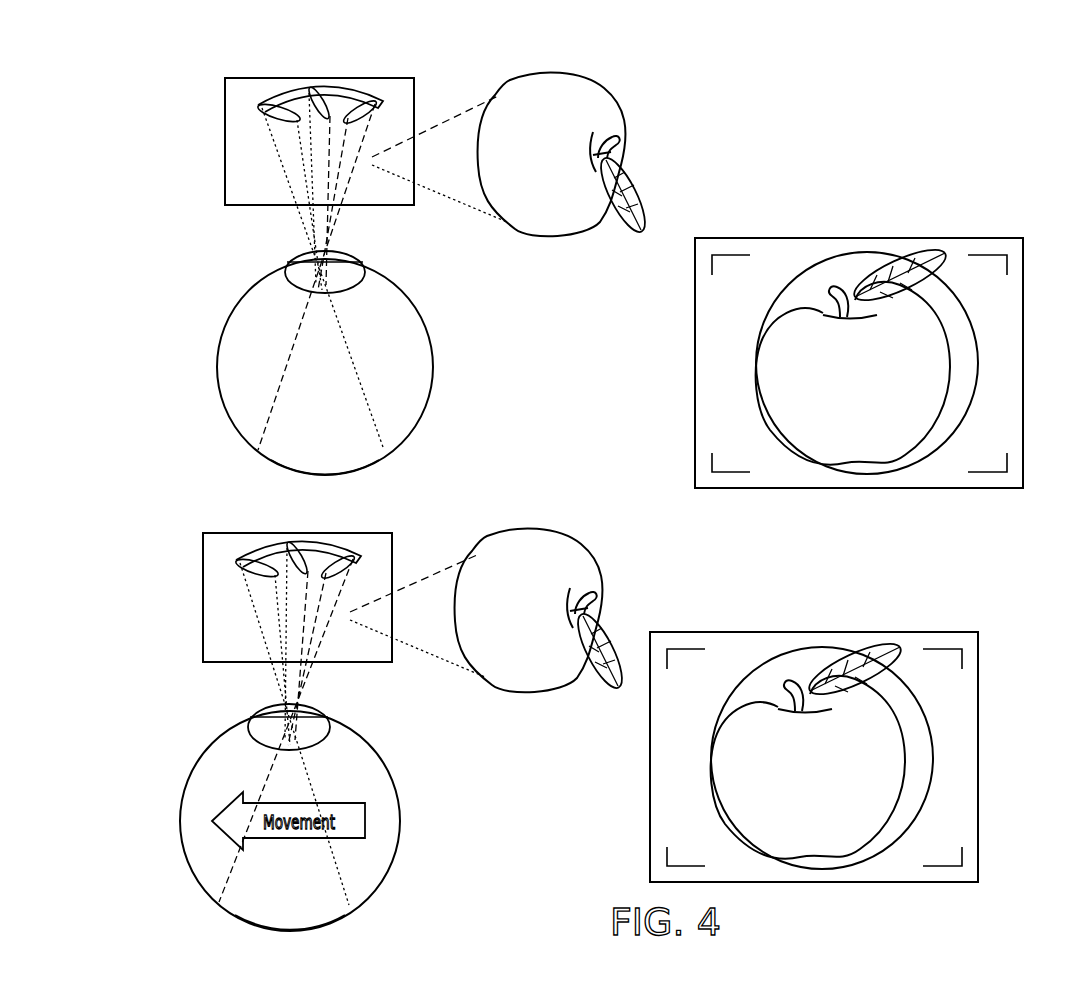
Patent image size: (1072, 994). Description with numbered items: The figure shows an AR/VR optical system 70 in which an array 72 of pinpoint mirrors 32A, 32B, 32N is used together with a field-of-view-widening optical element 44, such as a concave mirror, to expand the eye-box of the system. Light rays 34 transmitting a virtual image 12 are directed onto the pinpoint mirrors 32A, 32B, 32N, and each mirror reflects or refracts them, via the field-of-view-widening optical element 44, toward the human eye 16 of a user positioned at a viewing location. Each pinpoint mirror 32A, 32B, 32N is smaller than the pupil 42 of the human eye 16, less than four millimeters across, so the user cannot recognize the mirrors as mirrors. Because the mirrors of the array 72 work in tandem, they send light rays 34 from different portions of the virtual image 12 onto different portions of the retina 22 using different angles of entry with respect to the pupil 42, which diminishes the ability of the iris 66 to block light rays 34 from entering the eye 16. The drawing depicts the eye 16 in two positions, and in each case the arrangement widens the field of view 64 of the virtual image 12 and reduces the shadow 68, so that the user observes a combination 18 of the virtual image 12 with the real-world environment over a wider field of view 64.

The virtual image 12 is at (558, 237).
The human eye 16 is at (217, 322).
The combination of virtual image with real-world environment 18 is at (718, 362).
The retina 22 is at (340, 470).
The pinpoint mirror 32A is at (302, 152).
The pinpoint mirror 32B is at (322, 157).
The pinpoint mirror 32N is at (342, 160).
The light rays 34 is at (470, 108).
The pupil 42 is at (338, 258).
The field-of-view-widening optical element 44 is at (262, 97).
The field of view 64 is at (968, 343).
The iris 66 is at (287, 255).
The shadow 68 is at (930, 250).
The AR/VR optical system 70 is at (225, 172).
The array of pinpoint mirrors 72 is at (278, 162).